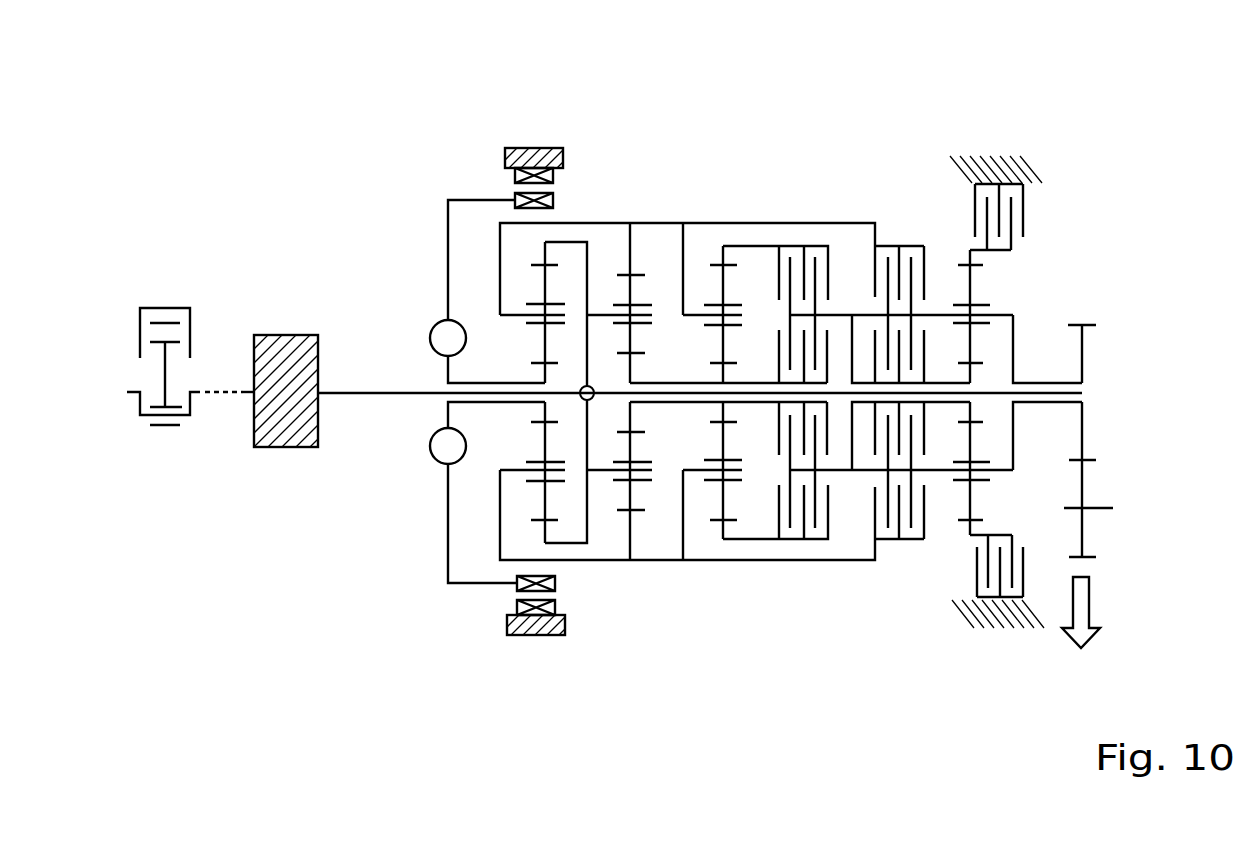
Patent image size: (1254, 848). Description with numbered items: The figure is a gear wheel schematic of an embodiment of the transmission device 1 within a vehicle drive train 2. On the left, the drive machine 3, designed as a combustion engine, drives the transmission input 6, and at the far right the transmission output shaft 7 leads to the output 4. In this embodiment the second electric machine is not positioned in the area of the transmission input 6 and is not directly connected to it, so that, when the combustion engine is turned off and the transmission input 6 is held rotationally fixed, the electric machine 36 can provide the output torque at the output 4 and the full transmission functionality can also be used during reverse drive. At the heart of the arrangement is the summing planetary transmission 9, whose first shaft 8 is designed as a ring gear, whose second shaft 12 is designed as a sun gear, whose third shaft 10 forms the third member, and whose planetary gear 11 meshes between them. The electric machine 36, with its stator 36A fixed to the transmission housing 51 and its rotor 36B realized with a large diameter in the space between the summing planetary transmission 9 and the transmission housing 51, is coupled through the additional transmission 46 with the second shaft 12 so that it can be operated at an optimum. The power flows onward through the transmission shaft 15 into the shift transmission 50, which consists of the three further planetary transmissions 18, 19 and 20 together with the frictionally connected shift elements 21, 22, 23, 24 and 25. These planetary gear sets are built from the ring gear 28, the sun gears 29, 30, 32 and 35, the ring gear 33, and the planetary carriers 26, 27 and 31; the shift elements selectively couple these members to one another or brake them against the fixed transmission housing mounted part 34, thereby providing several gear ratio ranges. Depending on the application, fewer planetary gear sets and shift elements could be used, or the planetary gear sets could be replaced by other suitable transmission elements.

The transmission device 1 is at (303, 232).
The vehicle drive train 2 is at (325, 492).
The drive machine 3 is at (168, 282).
The output 4 is at (1053, 632).
The transmission input 6 is at (437, 380).
The transmission output shaft 7 is at (1083, 365).
The first shaft of the summing planetary transmission 8 is at (572, 240).
The summing planetary transmission 9 is at (532, 528).
The third shaft of the summing planetary transmission 10 is at (500, 298).
The planetary gear 11 is at (543, 287).
The second shaft of the summing planetary transmission 12 is at (540, 412).
The transmission shaft 15 is at (946, 392).
The planetary transmission 18 is at (625, 525).
The planetary transmission 19 is at (713, 530).
The planetary transmission 20 is at (958, 538).
The friction locking shift element 21 is at (822, 545).
The friction locking shift element 22 is at (833, 437).
The friction locking shift element 23 is at (897, 235).
The friction locking shift element 24 is at (878, 325).
The friction locking shift element 25 is at (1032, 232).
The planetary carrier 26 is at (650, 478).
The planetary carrier 27 is at (740, 470).
The ring gear 28 is at (630, 253).
The sun gear 29 is at (637, 367).
The sun gear 30 is at (723, 373).
The planetary carrier 31 is at (1000, 470).
The sun gear 32 is at (970, 377).
The ring gear 33 is at (983, 523).
The fixed transmission housing mounted part 34 is at (993, 186).
The sun gear 35 is at (725, 524).
The electric machine 36 is at (512, 601).
The stator 36A is at (536, 606).
The rotor 36B is at (555, 588).
The additional transmission 46 is at (440, 450).
The shift transmission 50 is at (711, 207).
The transmission housing 51 is at (530, 162).